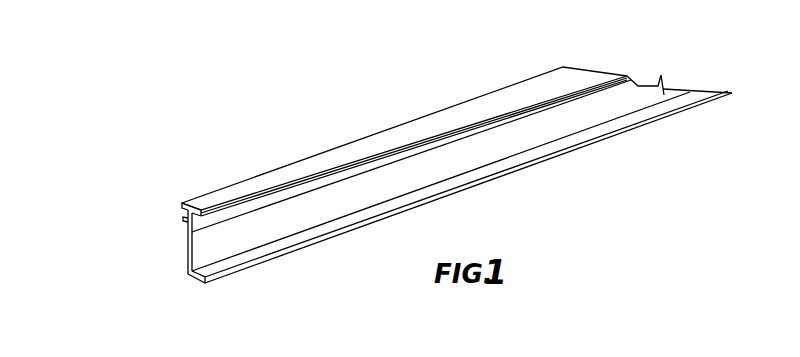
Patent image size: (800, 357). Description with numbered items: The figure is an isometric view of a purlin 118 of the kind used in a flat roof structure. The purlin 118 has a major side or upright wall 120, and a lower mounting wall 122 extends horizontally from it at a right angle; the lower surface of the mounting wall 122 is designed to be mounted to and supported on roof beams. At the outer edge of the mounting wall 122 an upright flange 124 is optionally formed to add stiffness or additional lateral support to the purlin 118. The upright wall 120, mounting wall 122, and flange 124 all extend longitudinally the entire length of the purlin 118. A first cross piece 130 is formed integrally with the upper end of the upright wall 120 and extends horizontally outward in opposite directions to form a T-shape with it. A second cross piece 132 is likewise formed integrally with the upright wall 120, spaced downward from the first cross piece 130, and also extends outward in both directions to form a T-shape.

The purlin 118 is at (405, 194).
The upright wall 120 is at (200, 243).
The mounting wall 122 is at (194, 276).
The upright flange 124 is at (210, 279).
The first cross piece 130 is at (250, 188).
The second cross piece 132 is at (174, 207).